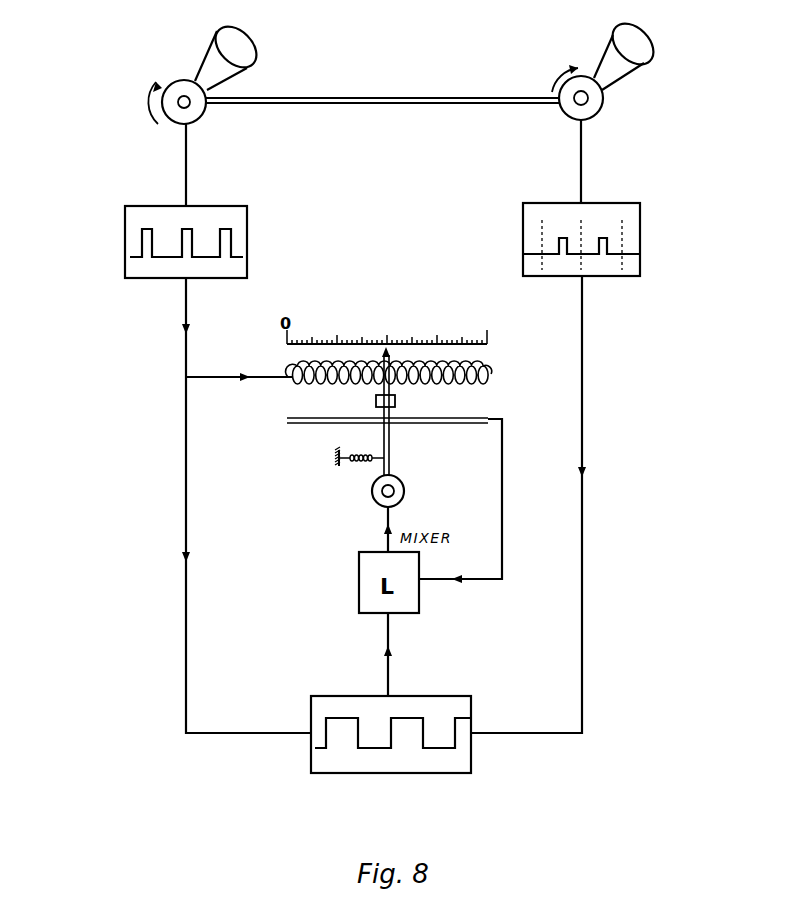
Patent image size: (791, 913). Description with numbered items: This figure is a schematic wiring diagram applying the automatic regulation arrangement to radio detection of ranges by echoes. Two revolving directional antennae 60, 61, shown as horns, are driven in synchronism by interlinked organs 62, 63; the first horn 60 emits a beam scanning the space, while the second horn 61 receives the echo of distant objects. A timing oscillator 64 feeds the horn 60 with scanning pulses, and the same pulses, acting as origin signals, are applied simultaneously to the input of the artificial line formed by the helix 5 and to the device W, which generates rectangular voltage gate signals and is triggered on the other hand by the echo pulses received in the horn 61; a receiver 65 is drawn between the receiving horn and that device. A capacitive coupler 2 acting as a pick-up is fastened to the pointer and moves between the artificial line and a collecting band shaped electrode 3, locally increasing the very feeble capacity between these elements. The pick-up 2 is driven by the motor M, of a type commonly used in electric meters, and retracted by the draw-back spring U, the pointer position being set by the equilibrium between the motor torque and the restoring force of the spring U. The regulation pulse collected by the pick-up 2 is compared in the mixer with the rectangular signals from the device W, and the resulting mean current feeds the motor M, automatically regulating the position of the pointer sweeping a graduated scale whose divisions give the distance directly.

The revolving directional antenna 60 is at (214, 36).
The revolving directional antenna 61 is at (612, 34).
The interlinked organ 62 is at (161, 105).
The interlinked organ 63 is at (603, 103).
The timing oscillator 64 is at (142, 231).
The receiver 65 is at (640, 245).
The capacitive coupler 2 is at (395, 401).
The collecting band shaped electrode 3 is at (387, 406).
The helix 5 is at (396, 375).
The motor M is at (404, 491).
The draw-back spring U is at (359, 449).
The device W is at (400, 765).